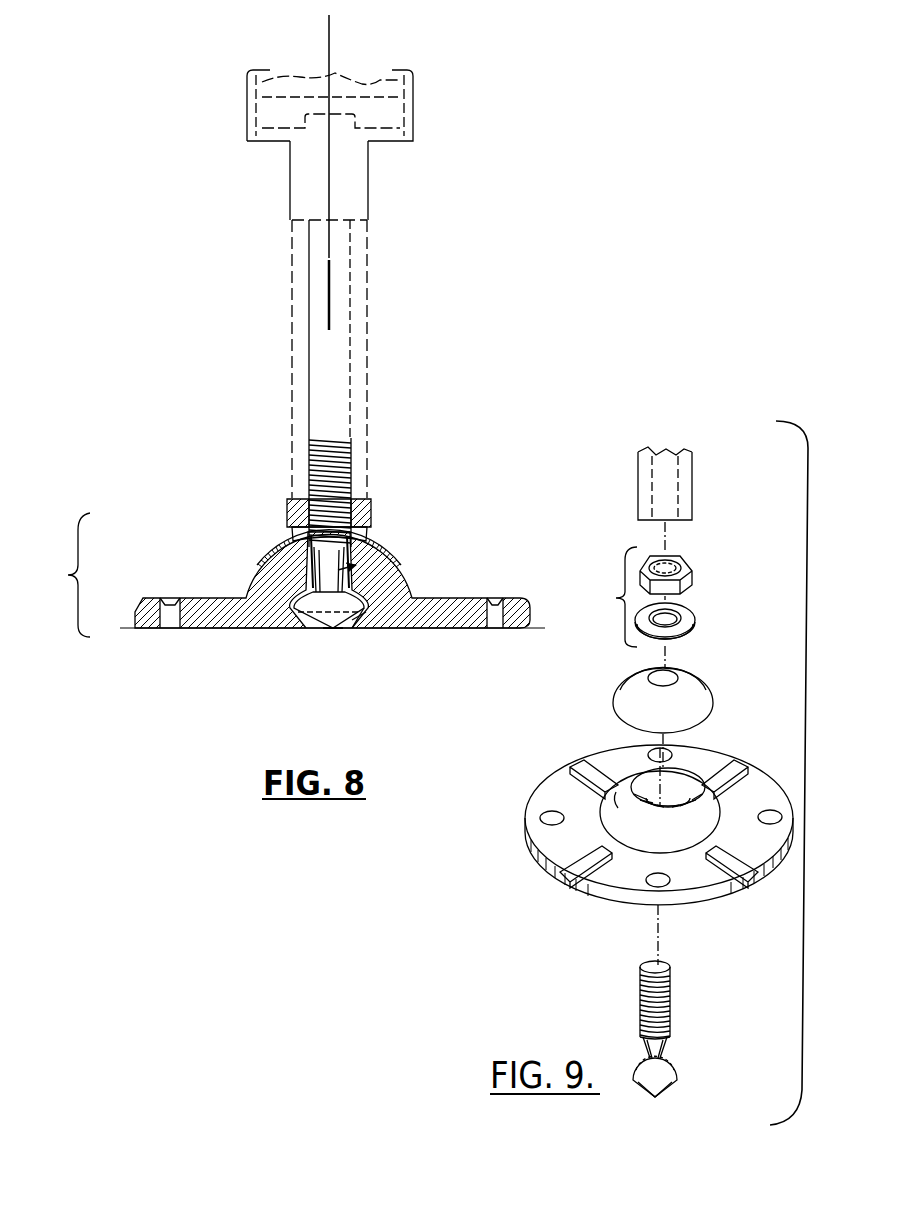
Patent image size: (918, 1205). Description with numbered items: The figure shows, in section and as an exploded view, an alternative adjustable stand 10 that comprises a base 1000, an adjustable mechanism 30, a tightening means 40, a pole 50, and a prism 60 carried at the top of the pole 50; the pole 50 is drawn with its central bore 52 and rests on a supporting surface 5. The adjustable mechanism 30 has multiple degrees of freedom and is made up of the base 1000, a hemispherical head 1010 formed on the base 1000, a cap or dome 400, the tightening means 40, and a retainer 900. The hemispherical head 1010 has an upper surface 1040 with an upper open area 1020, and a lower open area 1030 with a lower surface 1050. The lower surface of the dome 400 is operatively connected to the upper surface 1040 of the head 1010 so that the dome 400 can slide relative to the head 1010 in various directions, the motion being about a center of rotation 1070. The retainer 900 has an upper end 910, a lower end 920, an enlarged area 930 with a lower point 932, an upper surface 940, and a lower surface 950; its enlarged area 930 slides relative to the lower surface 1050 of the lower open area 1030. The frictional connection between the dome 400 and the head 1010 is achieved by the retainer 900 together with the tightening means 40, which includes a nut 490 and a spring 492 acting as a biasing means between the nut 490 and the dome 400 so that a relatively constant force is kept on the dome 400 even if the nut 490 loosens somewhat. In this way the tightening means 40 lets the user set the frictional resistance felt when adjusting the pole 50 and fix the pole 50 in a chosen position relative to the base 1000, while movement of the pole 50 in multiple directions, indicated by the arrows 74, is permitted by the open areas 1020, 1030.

In FIG. 8, the supporting surface 5 is at (130, 628).
In FIG. 8, the adjustable stand 10 is at (477, 298).
In FIG. 8, the adjustable mechanism 30 is at (68, 575).
In FIG. 9, the tightening means 40 is at (606, 587).
In FIG. 8, the pole 50 is at (370, 252).
In FIG. 9, the pole 50 is at (688, 462).
In FIG. 8, the shaft bore 52 is at (330, 302).
In FIG. 8, the prism 60 is at (388, 86).
In FIG. 8, the arrows 74 is at (303, 563).
In FIG. 8, the dome 400 is at (398, 560).
In FIG. 9, the dome 400 is at (684, 678).
In FIG. 8, the nut 490 is at (371, 500).
In FIG. 9, the nut 490 is at (688, 548).
In FIG. 8, the spring 492 is at (372, 535).
In FIG. 9, the spring 492 is at (691, 603).
In FIG. 9, the retainer 900 is at (669, 1020).
In FIG. 9, the upper end 910 is at (672, 968).
In FIG. 8, the lower end 920 is at (323, 578).
In FIG. 9, the lower end 920 is at (667, 1042).
In FIG. 8, the enlarged area 930 is at (300, 612).
In FIG. 9, the enlarged area 930 is at (678, 1072).
In FIG. 9, the lower point 932 is at (656, 1098).
In FIG. 9, the upper surface 940 is at (645, 1058).
In FIG. 8, the lower surface 950 is at (334, 630).
In FIG. 9, the lower surface 950 is at (668, 1091).
In FIG. 9, the base 1000 is at (553, 783).
In FIG. 9, the hemispherical head 1010 is at (705, 752).
In FIG. 8, the upper open area 1020 is at (372, 541).
In FIG. 9, the upper open area 1020 is at (698, 770).
In FIG. 8, the lower open area 1030 is at (360, 627).
In FIG. 8, the upper surface 1040 is at (410, 583).
In FIG. 9, the upper surface 1040 is at (620, 806).
In FIG. 8, the lower surface 1050 is at (358, 622).
In FIG. 8, the center of rotation 1070 is at (333, 628).